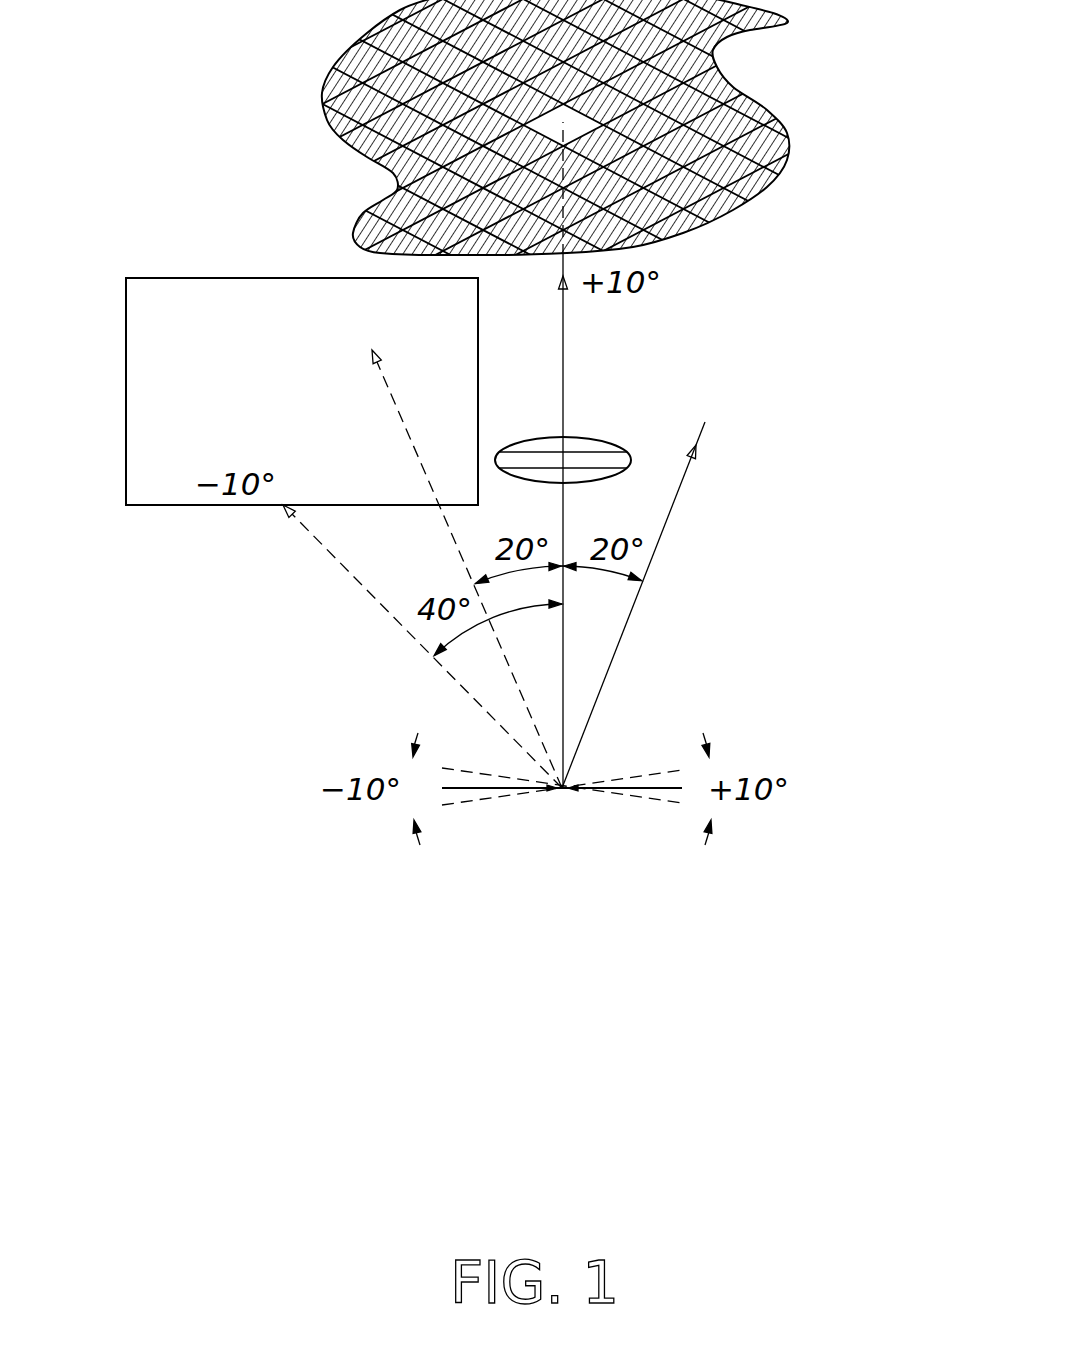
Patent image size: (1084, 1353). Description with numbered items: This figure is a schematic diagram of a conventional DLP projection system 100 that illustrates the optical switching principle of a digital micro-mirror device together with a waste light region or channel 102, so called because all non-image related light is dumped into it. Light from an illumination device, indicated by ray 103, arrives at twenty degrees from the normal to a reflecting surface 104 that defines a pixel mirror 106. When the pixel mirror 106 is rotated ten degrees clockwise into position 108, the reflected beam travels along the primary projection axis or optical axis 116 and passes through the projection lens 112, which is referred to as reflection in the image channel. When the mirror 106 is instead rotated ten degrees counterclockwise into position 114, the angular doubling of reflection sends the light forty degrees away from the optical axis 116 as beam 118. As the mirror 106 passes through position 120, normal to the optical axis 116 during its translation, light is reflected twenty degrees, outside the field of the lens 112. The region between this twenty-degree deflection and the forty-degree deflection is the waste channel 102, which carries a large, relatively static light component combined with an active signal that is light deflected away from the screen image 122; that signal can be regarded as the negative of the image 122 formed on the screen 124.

The DLP projection system 100 is at (291, 852).
The waste light region or channel 102 is at (283, 345).
The ray 103 is at (678, 497).
The reflecting surface 104 is at (670, 772).
The pixel mirror 106 is at (670, 793).
The position 108 is at (657, 805).
The projection lens 112 is at (594, 437).
The position 114 is at (492, 798).
The optical axis 116 is at (565, 628).
The beam 118 is at (350, 576).
The position 120 is at (453, 787).
The screen image 122 is at (771, 109).
The screen 124 is at (752, 205).